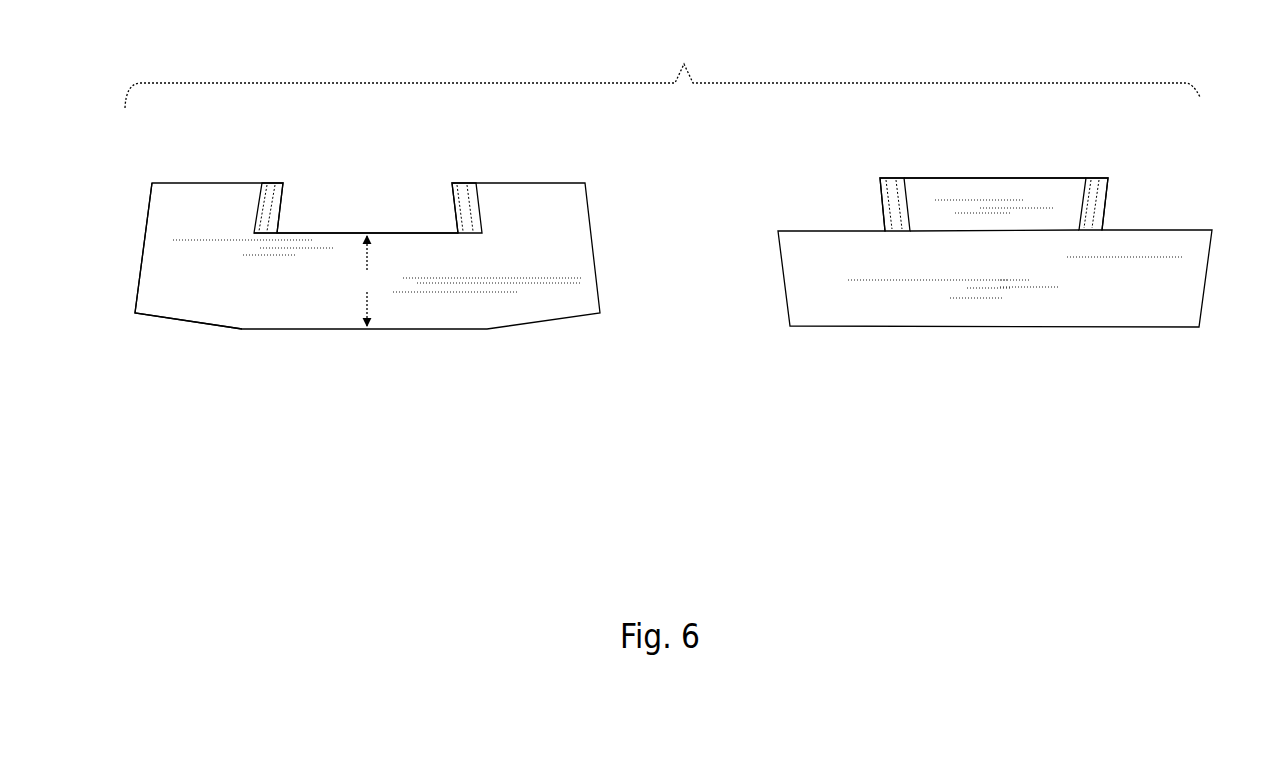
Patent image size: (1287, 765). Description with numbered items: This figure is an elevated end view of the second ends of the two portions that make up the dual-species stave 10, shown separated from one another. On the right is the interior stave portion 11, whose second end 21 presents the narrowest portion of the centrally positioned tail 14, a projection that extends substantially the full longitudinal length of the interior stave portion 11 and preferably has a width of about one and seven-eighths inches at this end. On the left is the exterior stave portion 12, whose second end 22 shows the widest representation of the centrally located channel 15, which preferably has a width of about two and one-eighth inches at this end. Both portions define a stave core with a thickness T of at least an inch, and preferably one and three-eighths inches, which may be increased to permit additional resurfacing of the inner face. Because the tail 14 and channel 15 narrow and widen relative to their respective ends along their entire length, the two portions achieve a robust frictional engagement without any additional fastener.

The dual-species stave 10 is at (684, 64).
The interior stave portion 11 is at (912, 173).
The exterior stave portion 12 is at (235, 172).
The tail 14 is at (1045, 190).
The channel 15 is at (386, 210).
The second end of interior stave portion 21 is at (801, 297).
The second end of exterior stave portion 22 is at (151, 276).
The thickness T is at (364, 281).